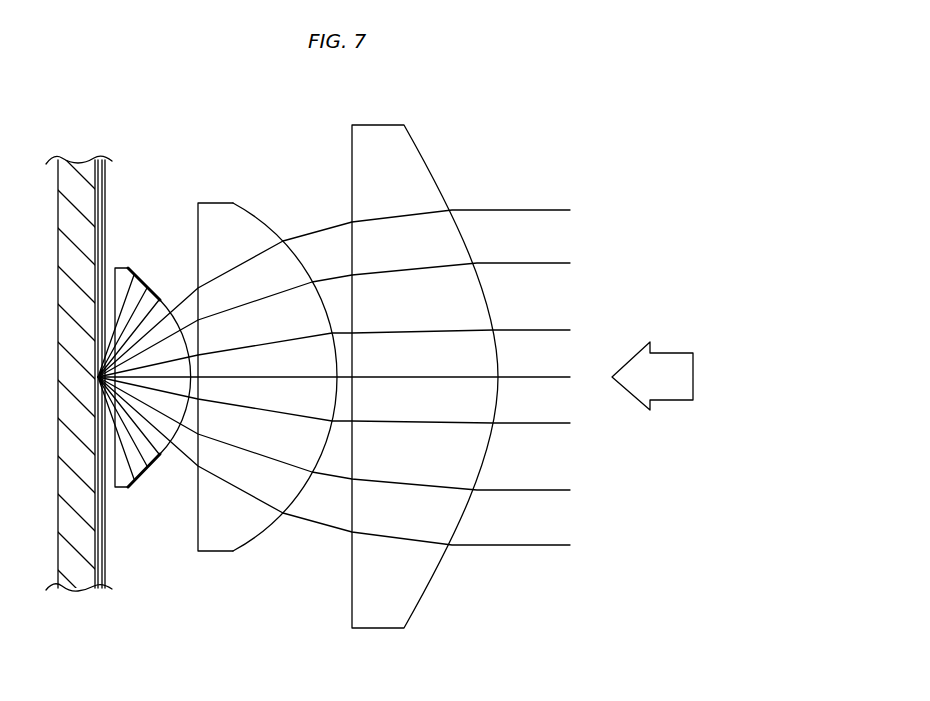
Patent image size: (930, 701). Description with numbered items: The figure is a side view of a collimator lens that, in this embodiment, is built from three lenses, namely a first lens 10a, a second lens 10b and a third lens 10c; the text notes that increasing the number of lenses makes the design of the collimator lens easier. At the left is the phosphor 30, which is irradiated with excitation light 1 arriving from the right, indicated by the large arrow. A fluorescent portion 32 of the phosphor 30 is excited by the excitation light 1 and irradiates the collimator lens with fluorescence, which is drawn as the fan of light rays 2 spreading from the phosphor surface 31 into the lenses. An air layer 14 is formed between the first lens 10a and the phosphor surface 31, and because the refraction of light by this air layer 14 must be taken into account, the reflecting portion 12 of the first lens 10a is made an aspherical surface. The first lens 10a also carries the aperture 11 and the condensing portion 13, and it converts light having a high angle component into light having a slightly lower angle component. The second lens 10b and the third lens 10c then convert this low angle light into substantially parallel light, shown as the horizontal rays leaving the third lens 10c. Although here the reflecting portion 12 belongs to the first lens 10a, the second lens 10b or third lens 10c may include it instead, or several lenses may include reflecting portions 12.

The excitation light 1 is at (676, 352).
The light rays 2 is at (527, 210).
The first lens 10a is at (249, 335).
The second lens 10b is at (291, 163).
The third lens 10c is at (470, 161).
The aperture 11 is at (157, 382).
The reflecting portion 12 is at (140, 273).
The condensing portion 13 is at (135, 440).
The air layer 14 is at (108, 480).
The phosphor 30 is at (117, 379).
The phosphor surface 31 is at (126, 374).
The fluorescent portion 32 is at (84, 202).